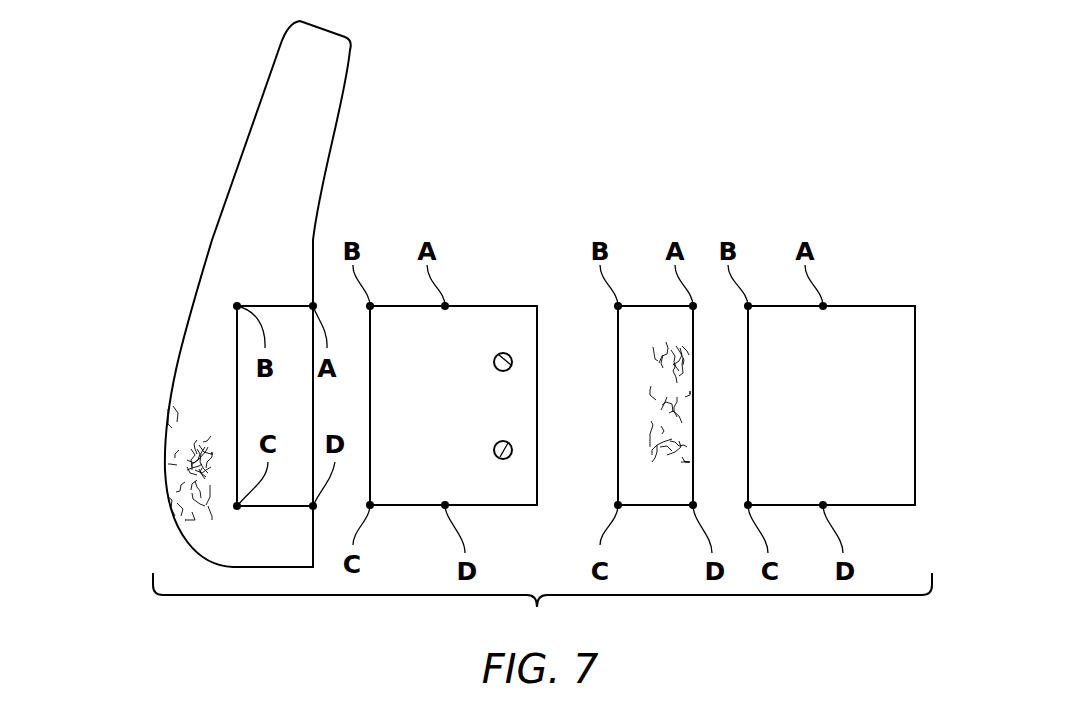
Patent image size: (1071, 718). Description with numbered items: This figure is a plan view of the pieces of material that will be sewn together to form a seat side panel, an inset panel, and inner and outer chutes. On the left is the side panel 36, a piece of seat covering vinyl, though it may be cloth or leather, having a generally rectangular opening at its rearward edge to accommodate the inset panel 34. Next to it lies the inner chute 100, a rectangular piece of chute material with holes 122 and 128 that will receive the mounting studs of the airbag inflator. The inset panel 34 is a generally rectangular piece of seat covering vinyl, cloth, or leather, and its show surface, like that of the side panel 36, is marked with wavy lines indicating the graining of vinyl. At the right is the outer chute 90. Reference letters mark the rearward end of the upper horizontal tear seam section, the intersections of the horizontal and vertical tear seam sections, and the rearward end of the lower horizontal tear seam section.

The side panel 36 is at (188, 373).
The inner chute 100 is at (473, 315).
The hole 128 is at (513, 361).
The hole 122 is at (507, 440).
The inset panel 34 is at (630, 417).
The outer chute 90 is at (843, 327).